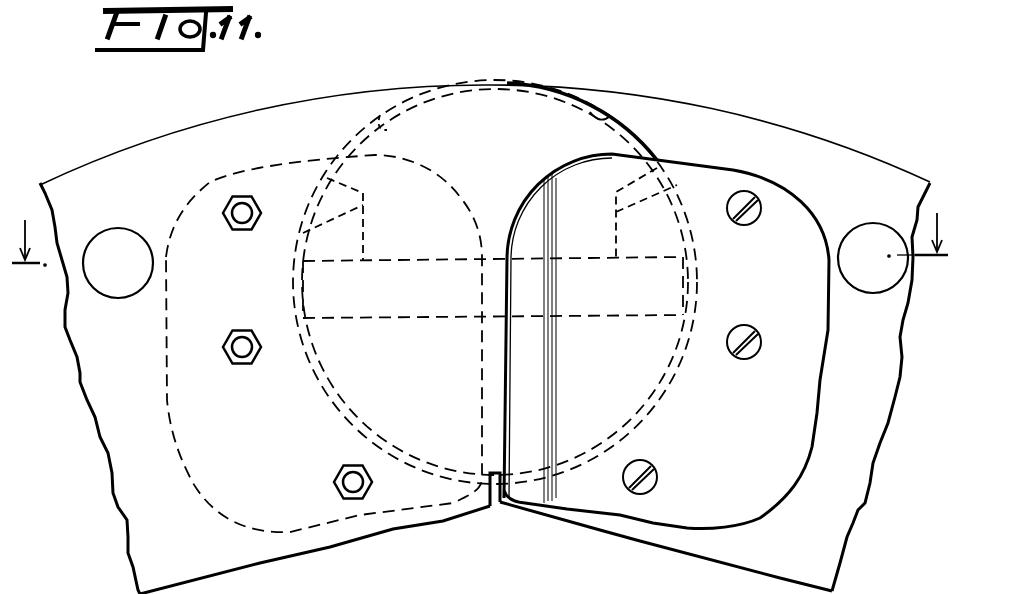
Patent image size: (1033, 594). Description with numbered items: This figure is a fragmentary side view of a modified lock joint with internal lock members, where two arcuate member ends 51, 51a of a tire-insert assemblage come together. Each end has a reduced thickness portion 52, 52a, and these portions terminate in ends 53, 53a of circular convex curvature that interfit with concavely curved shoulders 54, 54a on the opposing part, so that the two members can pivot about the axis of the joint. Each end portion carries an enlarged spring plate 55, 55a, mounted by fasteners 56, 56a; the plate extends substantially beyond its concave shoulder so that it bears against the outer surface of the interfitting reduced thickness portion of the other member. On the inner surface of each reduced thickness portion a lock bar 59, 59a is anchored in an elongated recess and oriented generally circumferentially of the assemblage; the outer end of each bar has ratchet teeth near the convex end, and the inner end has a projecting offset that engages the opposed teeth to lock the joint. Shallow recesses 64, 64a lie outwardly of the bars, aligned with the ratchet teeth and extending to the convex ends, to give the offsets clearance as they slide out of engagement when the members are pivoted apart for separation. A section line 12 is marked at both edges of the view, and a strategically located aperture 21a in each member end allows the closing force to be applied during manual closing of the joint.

The section line 12 is at (485, 254).
The aperture 21a is at (118, 237).
The arcuate member end 51 is at (143, 515).
The arcuate member end 51a is at (895, 510).
The reduced thickness portion 52 is at (436, 116).
The reduced thickness portion 52a is at (572, 94).
The convexly curved end 53 is at (612, 116).
The convexly curved end 53a is at (380, 113).
The concavely curved shoulder 54 is at (317, 382).
The concavely curved shoulder 54a is at (670, 380).
The spring plate 55 is at (167, 385).
The spring plate 55a is at (807, 383).
The fastener 56 is at (232, 228).
The fastener 56a is at (750, 226).
The lock bar 59 is at (398, 322).
The lock bar 59a is at (493, 316).
The shallow recess 64 is at (670, 188).
The shallow recess 64a is at (303, 233).